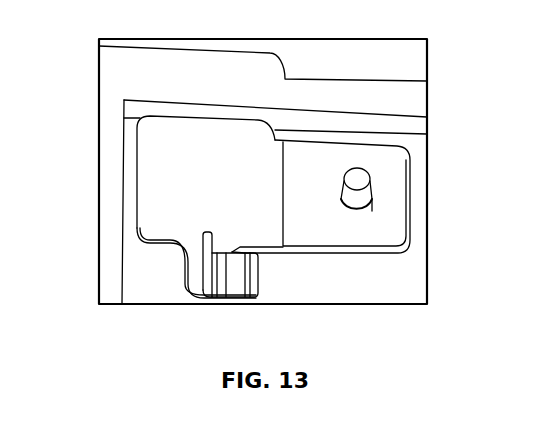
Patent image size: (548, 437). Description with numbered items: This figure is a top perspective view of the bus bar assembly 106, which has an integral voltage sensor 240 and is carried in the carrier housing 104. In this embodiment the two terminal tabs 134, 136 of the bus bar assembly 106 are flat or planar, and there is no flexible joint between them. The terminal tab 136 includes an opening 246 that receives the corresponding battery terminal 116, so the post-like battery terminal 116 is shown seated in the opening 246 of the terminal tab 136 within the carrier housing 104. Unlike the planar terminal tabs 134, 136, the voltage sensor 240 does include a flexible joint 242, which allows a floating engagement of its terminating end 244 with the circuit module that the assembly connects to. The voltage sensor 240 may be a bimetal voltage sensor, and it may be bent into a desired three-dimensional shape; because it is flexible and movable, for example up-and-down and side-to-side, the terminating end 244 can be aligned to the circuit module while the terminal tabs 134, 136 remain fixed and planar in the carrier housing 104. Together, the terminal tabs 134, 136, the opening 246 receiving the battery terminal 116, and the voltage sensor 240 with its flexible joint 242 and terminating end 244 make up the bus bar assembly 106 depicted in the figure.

The carrier housing 104 is at (403, 97).
The bus bar assembly 106 is at (310, 143).
The battery terminal 116 is at (355, 181).
The terminal tab 134 is at (162, 192).
The terminal tab 136 is at (353, 235).
The voltage sensor 240 is at (237, 282).
The flexible joint 242 is at (257, 278).
The terminating end 244 is at (206, 265).
The opening 246 is at (369, 207).